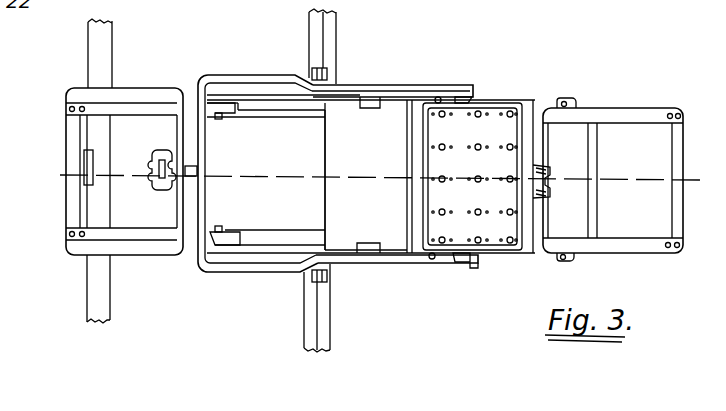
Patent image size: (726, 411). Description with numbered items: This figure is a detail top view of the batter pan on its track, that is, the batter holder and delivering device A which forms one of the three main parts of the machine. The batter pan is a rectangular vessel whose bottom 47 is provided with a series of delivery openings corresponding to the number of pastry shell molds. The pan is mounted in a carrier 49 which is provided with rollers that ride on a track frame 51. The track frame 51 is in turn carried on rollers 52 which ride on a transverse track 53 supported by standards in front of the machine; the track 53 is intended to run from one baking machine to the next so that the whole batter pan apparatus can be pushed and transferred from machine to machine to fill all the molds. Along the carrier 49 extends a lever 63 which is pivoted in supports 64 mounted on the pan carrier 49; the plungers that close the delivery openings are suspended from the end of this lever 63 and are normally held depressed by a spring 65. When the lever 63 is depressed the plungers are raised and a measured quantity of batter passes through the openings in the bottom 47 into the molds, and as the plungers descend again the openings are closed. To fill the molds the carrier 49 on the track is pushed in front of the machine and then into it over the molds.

The bottom 47 is at (393, 113).
The carrier 49 is at (244, 98).
The track frame 51 is at (675, 165).
The rollers 52 is at (93, 165).
The transverse track 53 is at (103, 58).
The lever 63 is at (446, 88).
The supports 64 is at (368, 100).
The spring 65 is at (188, 163).
The batter holder and delivering device A is at (366, 153).